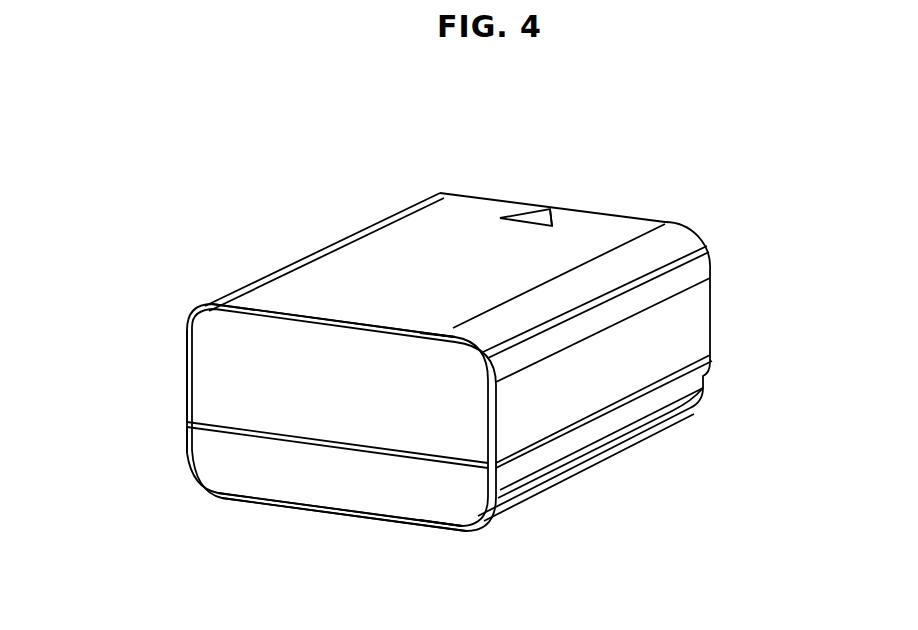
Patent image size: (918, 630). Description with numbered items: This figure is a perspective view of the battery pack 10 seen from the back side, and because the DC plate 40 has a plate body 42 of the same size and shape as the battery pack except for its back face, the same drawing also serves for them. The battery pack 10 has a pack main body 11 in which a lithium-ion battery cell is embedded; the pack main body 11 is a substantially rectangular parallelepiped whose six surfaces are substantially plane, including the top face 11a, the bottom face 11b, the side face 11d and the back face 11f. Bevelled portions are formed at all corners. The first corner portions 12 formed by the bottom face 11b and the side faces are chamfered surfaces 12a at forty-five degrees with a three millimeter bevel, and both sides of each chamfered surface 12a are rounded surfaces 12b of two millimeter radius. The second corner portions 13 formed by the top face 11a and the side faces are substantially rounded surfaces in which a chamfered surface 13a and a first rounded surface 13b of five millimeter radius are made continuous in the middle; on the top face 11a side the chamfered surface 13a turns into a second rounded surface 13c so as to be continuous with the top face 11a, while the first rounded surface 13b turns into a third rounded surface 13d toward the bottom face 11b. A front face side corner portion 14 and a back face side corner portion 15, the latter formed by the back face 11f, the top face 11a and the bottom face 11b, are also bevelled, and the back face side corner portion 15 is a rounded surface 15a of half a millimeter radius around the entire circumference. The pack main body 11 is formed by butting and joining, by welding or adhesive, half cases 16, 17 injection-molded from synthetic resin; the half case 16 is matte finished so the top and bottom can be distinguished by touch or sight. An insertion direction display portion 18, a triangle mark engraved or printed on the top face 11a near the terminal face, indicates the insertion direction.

The battery pack 10 is at (419, 344).
The DC plate 40 is at (419, 359).
The pack main body 11 is at (380, 399).
The plate body 42 is at (412, 399).
The top face 11a is at (362, 247).
The bottom face 11b is at (360, 516).
The side face 11d is at (690, 318).
The back face 11f is at (222, 372).
The first corner portion 12 is at (430, 487).
The chamfered surface 12a is at (590, 464).
The rounded surface 12b is at (667, 412).
The second corner portion 13 is at (328, 243).
The chamfered surface 13a is at (693, 231).
The first rounded surface 13b is at (698, 248).
The second rounded surface 13c is at (265, 278).
The third rounded surface 13d is at (692, 267).
The front face side corner portion 14 is at (553, 200).
The back face side corner portion 15 is at (327, 311).
The rounded surface 15a is at (428, 330).
The half case 16 is at (210, 446).
The half case 17 is at (207, 403).
The insertion direction display portion 18 is at (518, 210).